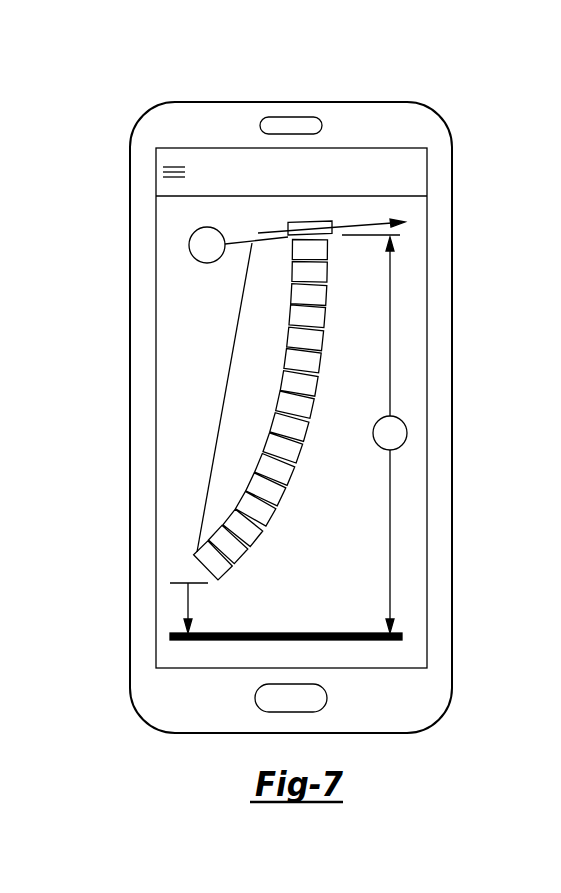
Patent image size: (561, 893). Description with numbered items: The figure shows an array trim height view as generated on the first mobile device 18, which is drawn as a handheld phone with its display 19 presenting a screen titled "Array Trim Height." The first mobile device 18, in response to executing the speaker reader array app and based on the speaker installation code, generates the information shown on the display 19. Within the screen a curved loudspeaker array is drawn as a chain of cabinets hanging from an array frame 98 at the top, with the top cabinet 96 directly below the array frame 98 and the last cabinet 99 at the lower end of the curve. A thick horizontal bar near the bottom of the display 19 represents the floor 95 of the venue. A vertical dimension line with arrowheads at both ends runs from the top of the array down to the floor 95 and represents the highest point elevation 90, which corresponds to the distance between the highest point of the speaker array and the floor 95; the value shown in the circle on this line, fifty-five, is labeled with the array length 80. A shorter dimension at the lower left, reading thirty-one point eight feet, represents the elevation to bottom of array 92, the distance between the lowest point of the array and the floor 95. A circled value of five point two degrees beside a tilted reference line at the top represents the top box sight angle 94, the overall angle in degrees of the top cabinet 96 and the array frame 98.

The first mobile device 18 is at (357, 102).
The display 19 is at (408, 280).
The array length 80 is at (407, 433).
The highest point elevation 90 is at (365, 223).
The elevation to bottom of array 92 is at (183, 583).
The top box sight angle 94 is at (188, 245).
The floor 95 is at (365, 642).
The top cabinet 96 is at (317, 248).
The array frame 98 is at (303, 222).
The last cabinet 99 is at (220, 580).